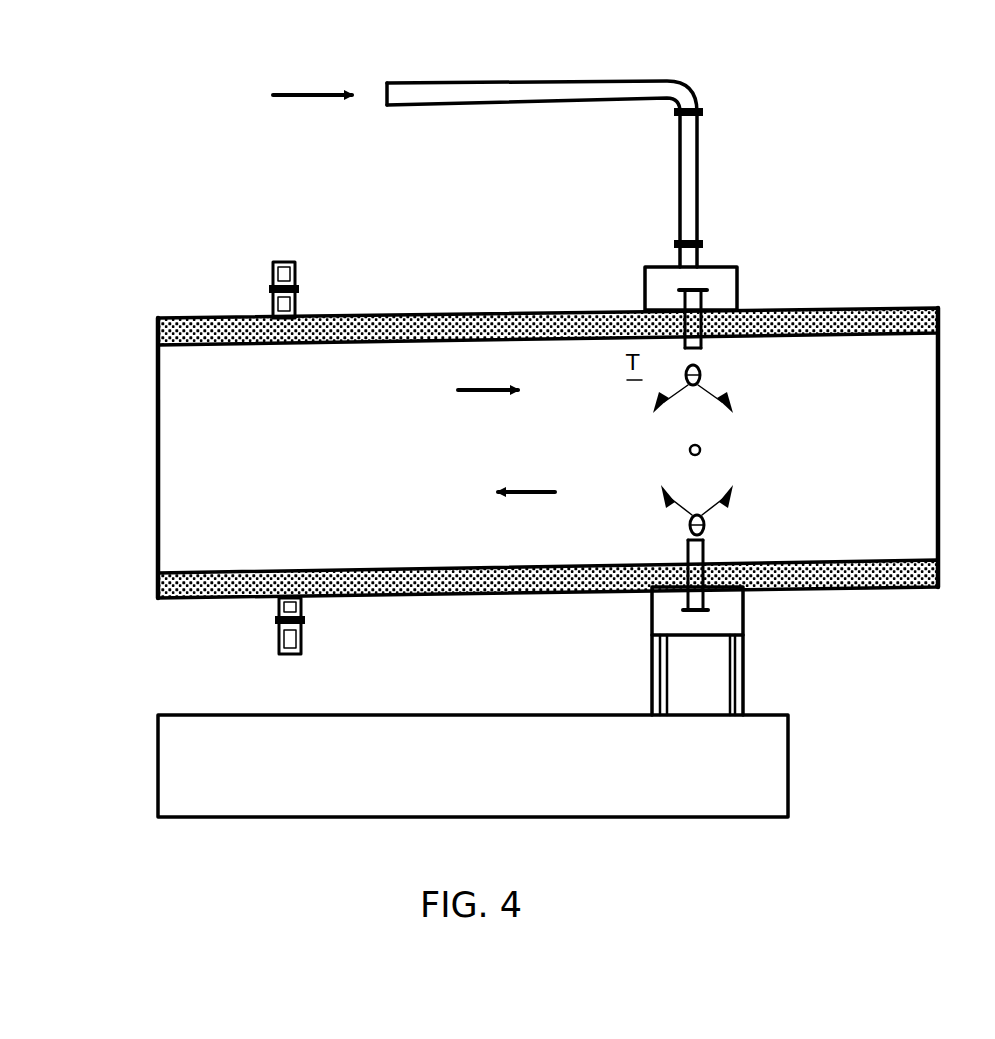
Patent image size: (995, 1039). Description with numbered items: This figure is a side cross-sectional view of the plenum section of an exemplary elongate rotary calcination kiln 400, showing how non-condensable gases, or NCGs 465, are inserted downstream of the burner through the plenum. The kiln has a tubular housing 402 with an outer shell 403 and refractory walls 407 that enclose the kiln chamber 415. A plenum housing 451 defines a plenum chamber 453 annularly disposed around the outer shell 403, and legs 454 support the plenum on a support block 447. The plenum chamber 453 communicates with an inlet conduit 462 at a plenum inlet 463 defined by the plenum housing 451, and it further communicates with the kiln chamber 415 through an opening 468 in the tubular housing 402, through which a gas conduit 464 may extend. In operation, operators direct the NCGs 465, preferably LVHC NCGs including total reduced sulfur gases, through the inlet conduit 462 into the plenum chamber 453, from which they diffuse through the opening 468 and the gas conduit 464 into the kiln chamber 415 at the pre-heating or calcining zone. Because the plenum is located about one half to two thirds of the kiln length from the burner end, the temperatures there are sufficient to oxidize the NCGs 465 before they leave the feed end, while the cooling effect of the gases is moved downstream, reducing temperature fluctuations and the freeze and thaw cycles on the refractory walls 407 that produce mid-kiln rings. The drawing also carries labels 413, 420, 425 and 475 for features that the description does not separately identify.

The elongate rotary calcination kiln 400 is at (97, 177).
The chamber 402 is at (852, 282).
The chamber wall 403 is at (922, 312).
The refractory walls 407 is at (362, 342).
The fastener 413 is at (298, 280).
The kiln chamber 415 is at (193, 503).
The flow direction 420 is at (526, 496).
The flow direction 425 is at (485, 392).
The base 447 is at (772, 750).
The lower housing 451 is at (745, 607).
The upper housing 453 is at (725, 292).
The actuator 454 is at (740, 668).
The supply conduit 462 is at (572, 83).
The vertical pipe 463 is at (697, 257).
The nozzle 464 is at (700, 352).
The NCGs 465 is at (317, 93).
The lower nozzle pipe 468 is at (722, 576).
The droplets 475 is at (605, 440).